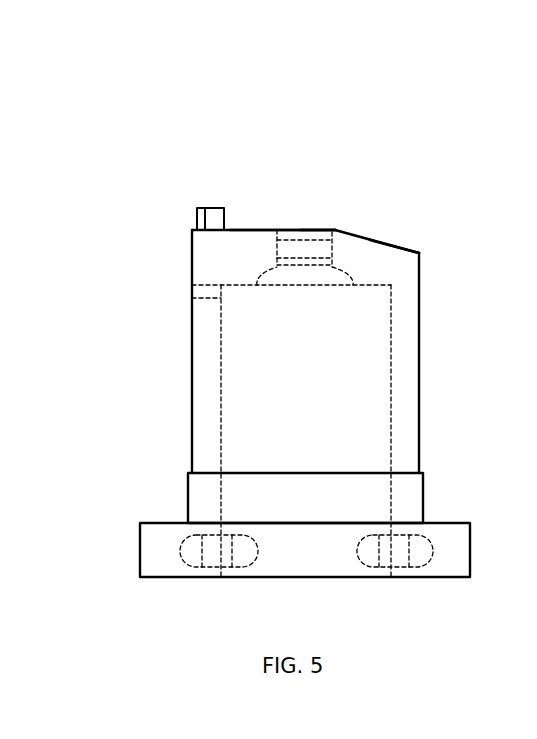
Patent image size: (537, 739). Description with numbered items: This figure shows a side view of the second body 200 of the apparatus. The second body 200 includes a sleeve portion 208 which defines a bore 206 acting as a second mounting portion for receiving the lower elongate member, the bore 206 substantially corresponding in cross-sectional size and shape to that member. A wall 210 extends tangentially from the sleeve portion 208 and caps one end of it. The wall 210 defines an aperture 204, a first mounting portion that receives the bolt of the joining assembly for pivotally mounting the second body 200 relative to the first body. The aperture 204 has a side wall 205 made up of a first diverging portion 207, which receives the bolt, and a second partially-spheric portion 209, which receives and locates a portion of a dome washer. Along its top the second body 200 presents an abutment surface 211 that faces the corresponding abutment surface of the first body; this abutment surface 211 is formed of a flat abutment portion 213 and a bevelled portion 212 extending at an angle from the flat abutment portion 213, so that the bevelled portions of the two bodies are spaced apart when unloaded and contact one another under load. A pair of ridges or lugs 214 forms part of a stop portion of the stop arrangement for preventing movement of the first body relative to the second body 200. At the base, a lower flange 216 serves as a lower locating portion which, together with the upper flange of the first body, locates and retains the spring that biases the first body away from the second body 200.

The second body 200 is at (98, 147).
The aperture 204 is at (318, 222).
The side wall 205 is at (279, 258).
The bore 206 is at (367, 321).
The first diverging portion 207 is at (280, 247).
The sleeve portion 208 is at (417, 443).
The second partially-spheric portion 209 is at (265, 280).
The wall 210 is at (358, 253).
The abutment surface 211 is at (272, 201).
The bevelled portion 212 is at (381, 242).
The flat abutment portion 213 is at (253, 229).
The ridges or lugs 214 is at (197, 214).
The lower flange 216 is at (168, 560).